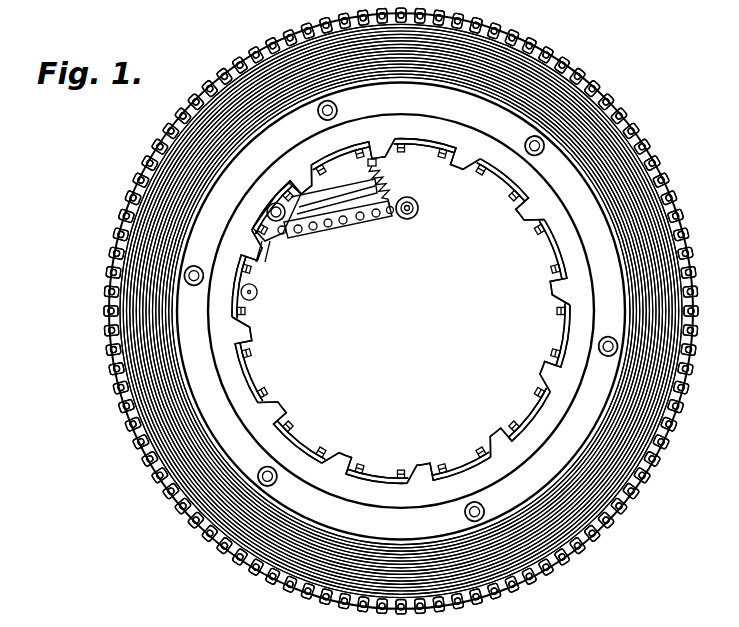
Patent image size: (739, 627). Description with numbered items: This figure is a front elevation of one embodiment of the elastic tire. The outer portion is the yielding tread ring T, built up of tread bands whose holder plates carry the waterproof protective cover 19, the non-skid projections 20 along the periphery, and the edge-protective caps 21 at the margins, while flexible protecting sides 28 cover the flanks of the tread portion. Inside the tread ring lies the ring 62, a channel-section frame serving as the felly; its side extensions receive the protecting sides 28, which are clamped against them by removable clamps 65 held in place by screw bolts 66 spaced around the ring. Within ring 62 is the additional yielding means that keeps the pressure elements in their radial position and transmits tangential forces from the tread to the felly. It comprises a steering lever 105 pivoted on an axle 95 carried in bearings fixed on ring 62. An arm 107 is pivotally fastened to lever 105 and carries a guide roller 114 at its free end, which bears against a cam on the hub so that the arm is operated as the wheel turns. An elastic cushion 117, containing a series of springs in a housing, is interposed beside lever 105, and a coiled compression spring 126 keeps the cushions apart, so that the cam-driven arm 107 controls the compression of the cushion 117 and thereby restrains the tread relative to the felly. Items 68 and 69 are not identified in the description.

The tread ring T is at (573, 66).
The waterproof protective cover 19 is at (682, 221).
The non-skid projections 20 is at (621, 108).
The edge-protective caps 21 is at (655, 164).
The protecting sides 28 is at (401, 310).
The ring 62 is at (553, 296).
The removable clamps 65 is at (401, 311).
The screw bolts 66 is at (338, 111).
The ring segments 68 is at (254, 378).
The rivets 69 is at (252, 352).
The axle 95 is at (267, 212).
The lever 105 is at (334, 196).
The arm 107 is at (389, 218).
The guide roller 114 is at (419, 213).
The elastic cushion 117 is at (340, 222).
The coiled compression spring 126 is at (388, 177).